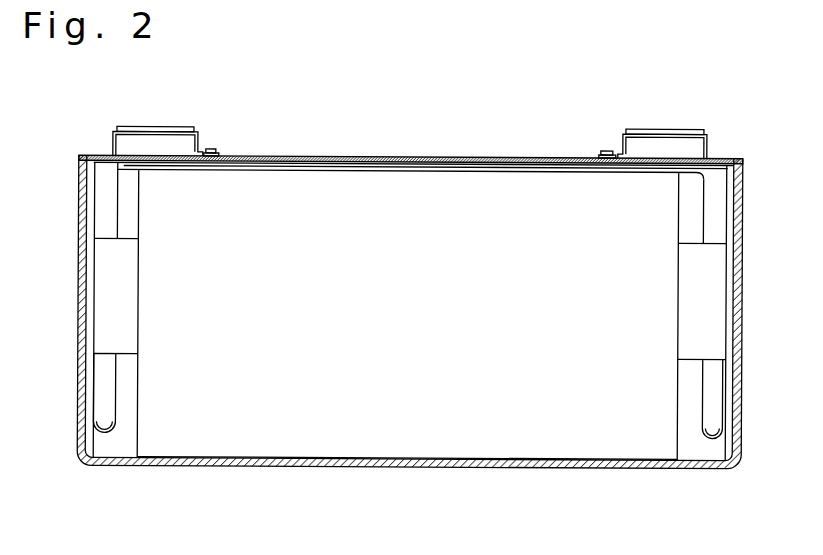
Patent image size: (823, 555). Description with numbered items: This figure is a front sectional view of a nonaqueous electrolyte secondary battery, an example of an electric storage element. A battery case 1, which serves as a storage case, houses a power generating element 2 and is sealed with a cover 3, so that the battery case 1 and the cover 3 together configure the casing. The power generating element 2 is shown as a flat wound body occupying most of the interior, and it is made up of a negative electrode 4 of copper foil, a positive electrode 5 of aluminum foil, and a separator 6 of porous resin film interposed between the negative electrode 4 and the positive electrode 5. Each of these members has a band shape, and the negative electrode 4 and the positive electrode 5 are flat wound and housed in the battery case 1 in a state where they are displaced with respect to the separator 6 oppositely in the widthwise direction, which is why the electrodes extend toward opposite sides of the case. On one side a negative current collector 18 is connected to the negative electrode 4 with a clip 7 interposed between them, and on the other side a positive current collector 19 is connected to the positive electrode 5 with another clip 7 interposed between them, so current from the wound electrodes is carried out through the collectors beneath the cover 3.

The battery case 1 is at (550, 469).
The power generating element 2 is at (332, 438).
The cover 3 is at (402, 157).
The negative electrode 4 is at (131, 443).
The positive electrode 5 is at (688, 442).
The separator 6 is at (262, 437).
The clip 7 is at (103, 306).
The negative current collector 18 is at (103, 201).
The positive current collector 19 is at (718, 203).